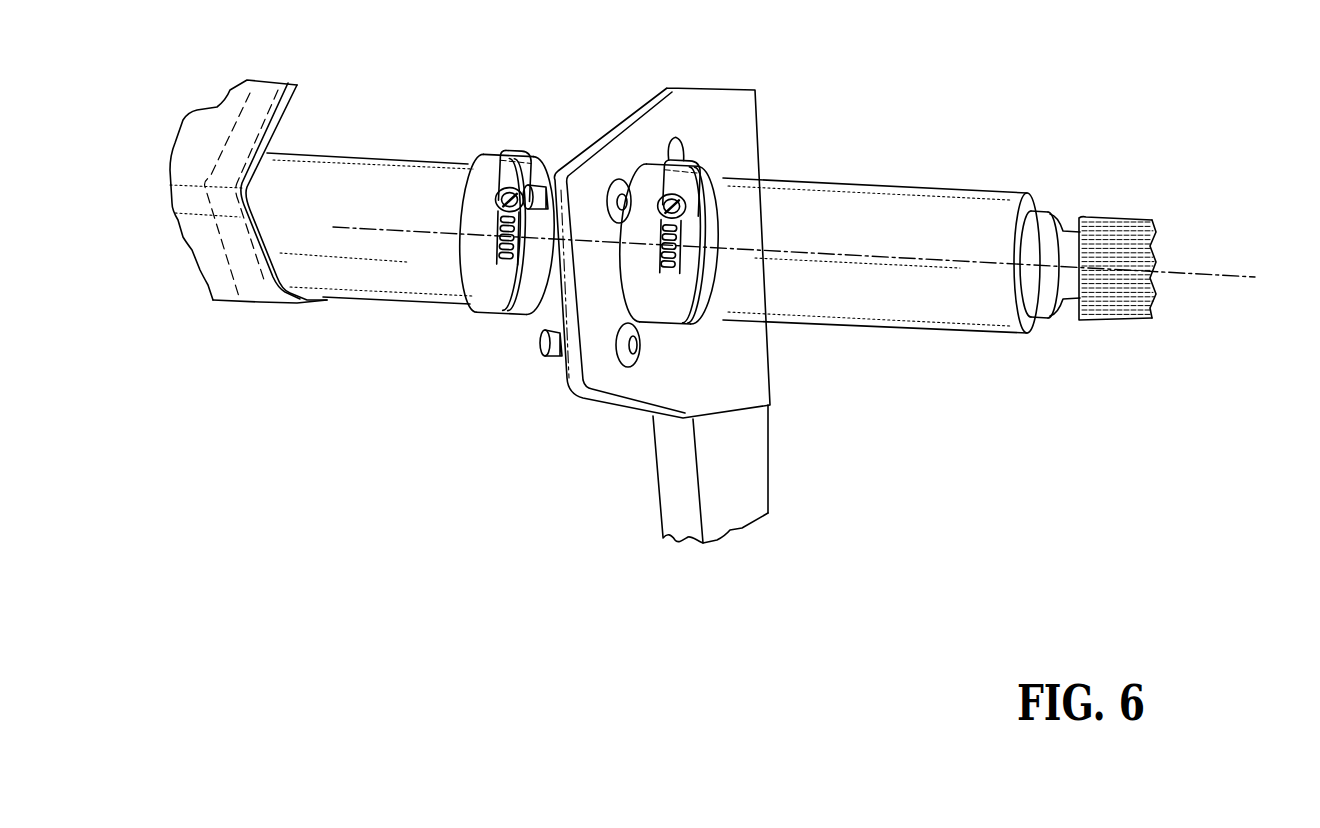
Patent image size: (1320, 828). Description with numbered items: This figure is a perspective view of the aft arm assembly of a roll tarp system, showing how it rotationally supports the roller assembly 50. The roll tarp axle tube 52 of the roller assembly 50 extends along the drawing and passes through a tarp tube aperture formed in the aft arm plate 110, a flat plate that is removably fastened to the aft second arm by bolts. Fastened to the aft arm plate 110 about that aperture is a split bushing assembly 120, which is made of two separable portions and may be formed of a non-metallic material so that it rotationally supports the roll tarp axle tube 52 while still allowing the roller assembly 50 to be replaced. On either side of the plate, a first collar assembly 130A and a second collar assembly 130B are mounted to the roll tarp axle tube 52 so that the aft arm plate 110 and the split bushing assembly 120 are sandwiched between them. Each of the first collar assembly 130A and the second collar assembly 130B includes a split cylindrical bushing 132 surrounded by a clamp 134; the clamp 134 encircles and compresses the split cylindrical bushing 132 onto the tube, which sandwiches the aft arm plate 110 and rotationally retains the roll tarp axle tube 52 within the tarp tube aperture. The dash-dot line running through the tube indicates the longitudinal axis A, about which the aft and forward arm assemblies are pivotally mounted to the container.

The roller assembly 50 is at (225, 294).
The roll tarp axle tube 52 is at (945, 208).
The aft arm plate 110 is at (673, 107).
The split bushing assembly 120 is at (568, 148).
The first collar assembly 130A is at (716, 330).
The second collar assembly 130B is at (456, 279).
The split cylindrical bushing 132 is at (478, 181).
The clamp 134 is at (684, 166).
The longitudinal axis A is at (1205, 272).